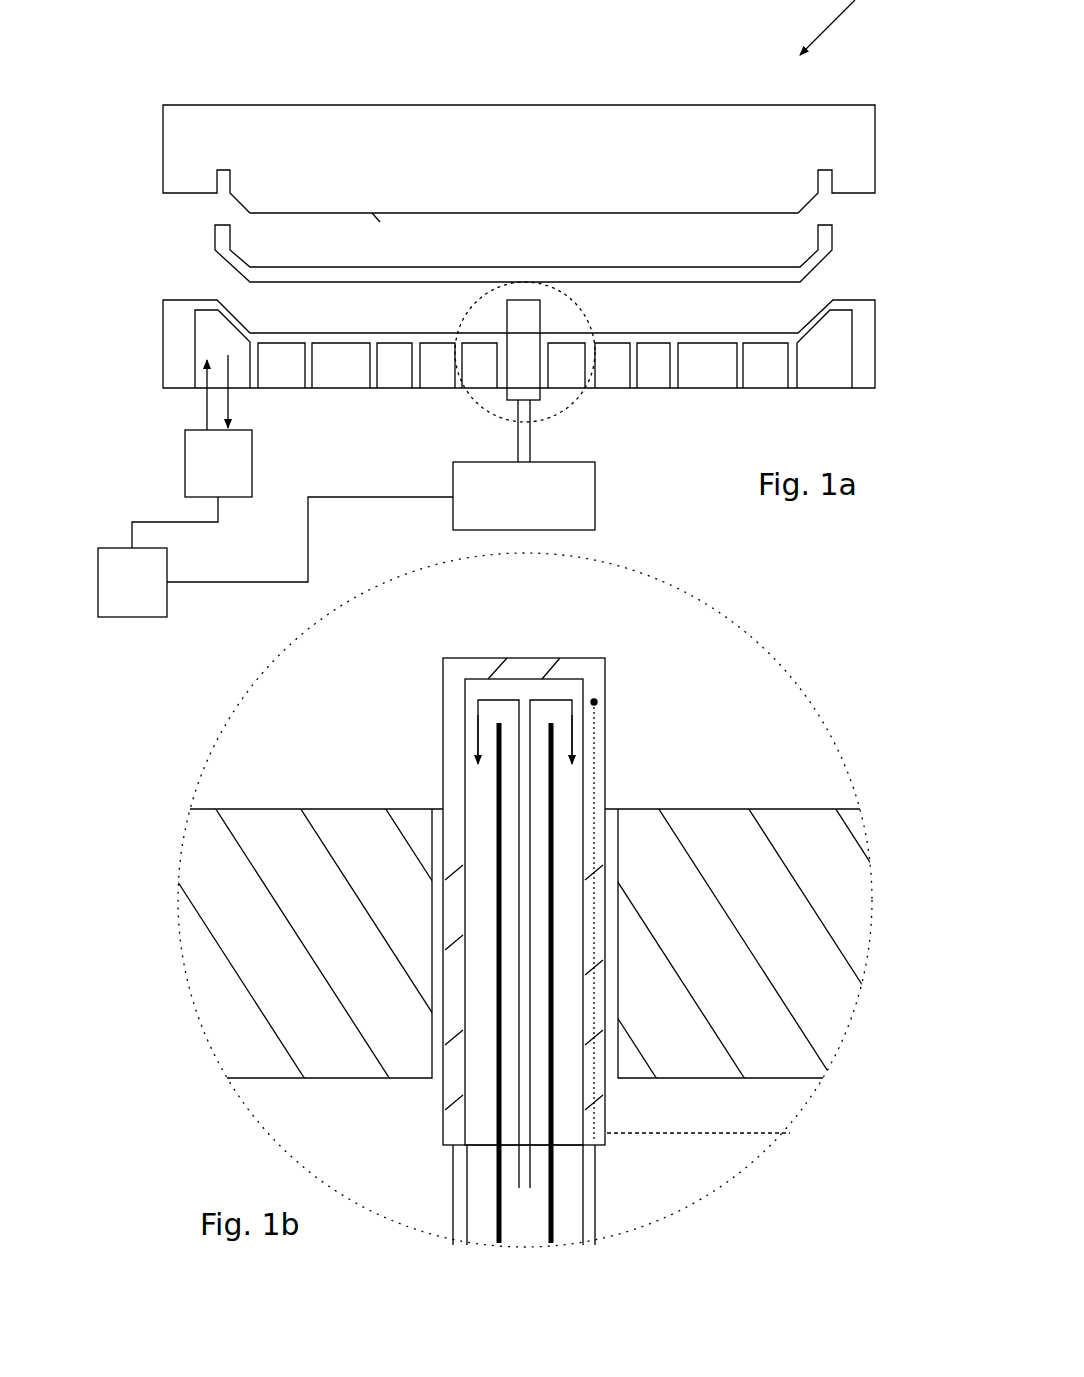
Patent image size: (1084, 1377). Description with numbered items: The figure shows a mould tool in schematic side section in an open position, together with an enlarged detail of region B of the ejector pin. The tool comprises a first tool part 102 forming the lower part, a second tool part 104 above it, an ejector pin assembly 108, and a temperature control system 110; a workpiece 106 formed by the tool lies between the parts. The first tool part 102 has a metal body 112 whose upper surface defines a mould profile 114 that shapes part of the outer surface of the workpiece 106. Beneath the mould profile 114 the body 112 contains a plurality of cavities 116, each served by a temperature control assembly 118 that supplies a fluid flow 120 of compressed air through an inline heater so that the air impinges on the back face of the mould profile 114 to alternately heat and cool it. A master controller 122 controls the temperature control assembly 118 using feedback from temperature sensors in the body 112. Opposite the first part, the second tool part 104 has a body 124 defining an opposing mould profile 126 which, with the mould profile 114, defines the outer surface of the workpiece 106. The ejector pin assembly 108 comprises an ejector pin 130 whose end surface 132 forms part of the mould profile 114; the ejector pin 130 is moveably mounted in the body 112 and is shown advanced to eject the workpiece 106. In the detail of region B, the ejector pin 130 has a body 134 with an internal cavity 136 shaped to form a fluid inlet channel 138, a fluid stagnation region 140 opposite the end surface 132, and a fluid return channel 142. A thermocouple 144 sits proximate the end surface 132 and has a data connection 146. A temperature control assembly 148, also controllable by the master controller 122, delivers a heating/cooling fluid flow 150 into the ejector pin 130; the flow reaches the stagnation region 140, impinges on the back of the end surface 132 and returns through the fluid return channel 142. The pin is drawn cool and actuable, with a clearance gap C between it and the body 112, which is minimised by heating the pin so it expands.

In FIG. 1A, the first tool part 102 is at (495, 370).
In FIG. 1B, the first tool part 102 is at (528, 945).
In FIG. 1A, the second tool part 104 is at (155, 148).
In FIG. 1A, the workpiece 106 is at (852, 233).
In FIG. 1A, the ejector pin assembly 108 is at (632, 425).
In FIG. 1A, the temperature control system 110 is at (128, 640).
In FIG. 1A, the body 112 is at (862, 312).
In FIG. 1A, the mould profile 114 is at (348, 333).
In FIG. 1A, the cavities 116 is at (206, 322).
In FIG. 1A, the temperature control assembly 118 is at (212, 426).
In FIG. 1A, the fluid flow 120 is at (208, 398).
In FIG. 1A, the master controller 122 is at (132, 582).
In FIG. 1A, the body 124 is at (497, 148).
In FIG. 1A, the opposing mould profile 126 is at (372, 213).
In FIG. 1A, the ejector pin 130 is at (522, 356).
In FIG. 1B, the ejector pin 130 is at (548, 935).
In FIG. 1A, the end surface 132 is at (533, 298).
In FIG. 1B, the end surface 132 is at (570, 658).
In FIG. 1B, the body 134 is at (465, 722).
In FIG. 1B, the internal cavity 136 is at (465, 1085).
In FIG. 1B, the fluid inlet channel 138 is at (538, 806).
In FIG. 1B, the fluid stagnation region 140 is at (600, 682).
In FIG. 1B, the fluid return channel 142 is at (482, 797).
In FIG. 1B, the thermocouple 144 is at (605, 699).
In FIG. 1A, the data connection 146 is at (612, 497).
In FIG. 1B, the temperature control assembly 148 is at (662, 1140).
In FIG. 1B, the heating/cooling fluid flow 150 is at (512, 1183).
In FIG. 1A, the region B is at (567, 405).
In FIG. 1B, the clearance gap C is at (490, 980).